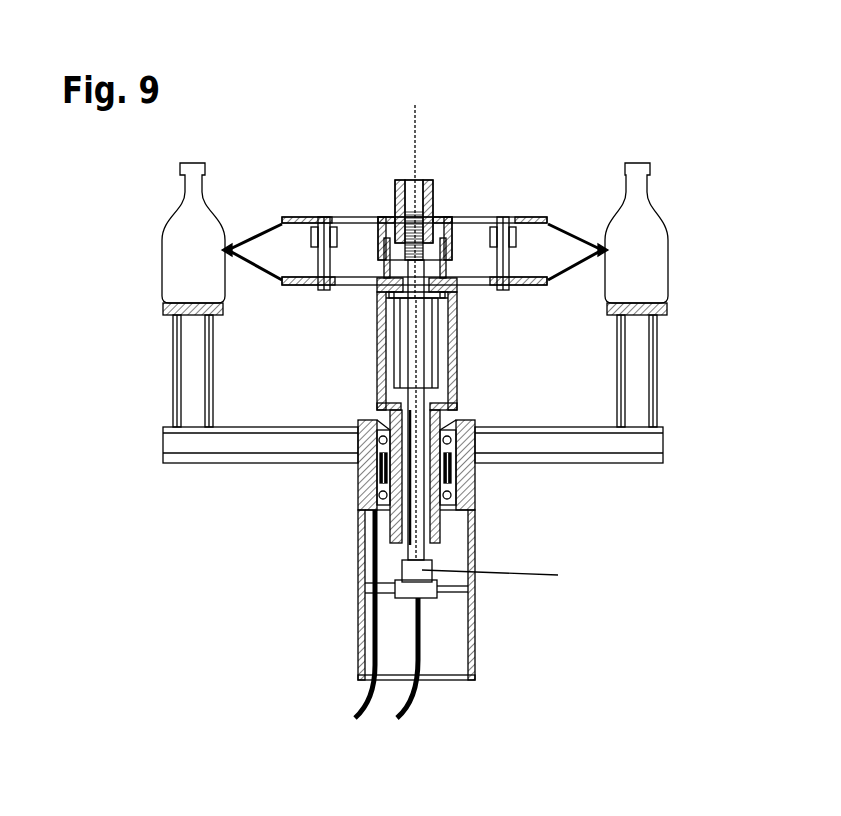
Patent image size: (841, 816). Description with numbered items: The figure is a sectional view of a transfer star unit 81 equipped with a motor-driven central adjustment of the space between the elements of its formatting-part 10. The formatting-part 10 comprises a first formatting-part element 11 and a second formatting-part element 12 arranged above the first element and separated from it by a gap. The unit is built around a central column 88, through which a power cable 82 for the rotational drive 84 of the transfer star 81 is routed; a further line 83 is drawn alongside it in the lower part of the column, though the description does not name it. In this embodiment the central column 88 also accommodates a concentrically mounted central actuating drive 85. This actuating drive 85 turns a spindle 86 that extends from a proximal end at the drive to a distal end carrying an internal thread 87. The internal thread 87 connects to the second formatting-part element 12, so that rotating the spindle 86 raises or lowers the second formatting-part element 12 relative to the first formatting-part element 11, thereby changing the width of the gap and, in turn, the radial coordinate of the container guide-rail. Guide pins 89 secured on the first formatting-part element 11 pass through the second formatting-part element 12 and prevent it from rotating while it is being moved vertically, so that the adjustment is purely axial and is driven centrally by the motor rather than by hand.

The formatting-part 10 is at (256, 190).
The first formatting-part element 11 is at (530, 278).
The second formatting-part element 12 is at (528, 217).
The transfer star unit 81 is at (760, 196).
The power cable 82 is at (375, 657).
The supply line 83 is at (413, 683).
The rotational drive 84 is at (377, 470).
The central actuating drive 85 is at (423, 325).
The spindle 86 is at (432, 193).
The internal thread 87 is at (408, 180).
The central column 88 is at (465, 485).
The guide pins 89 is at (508, 208).